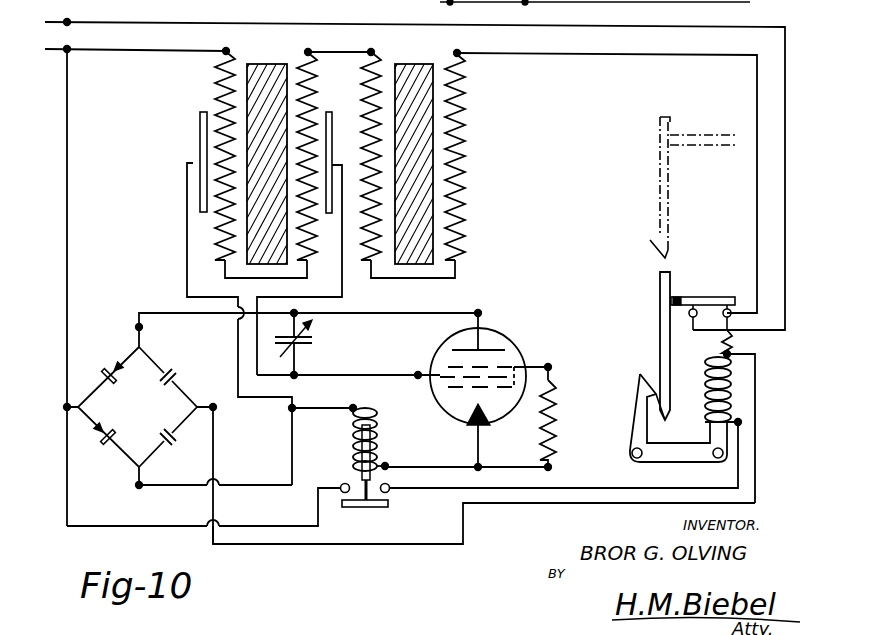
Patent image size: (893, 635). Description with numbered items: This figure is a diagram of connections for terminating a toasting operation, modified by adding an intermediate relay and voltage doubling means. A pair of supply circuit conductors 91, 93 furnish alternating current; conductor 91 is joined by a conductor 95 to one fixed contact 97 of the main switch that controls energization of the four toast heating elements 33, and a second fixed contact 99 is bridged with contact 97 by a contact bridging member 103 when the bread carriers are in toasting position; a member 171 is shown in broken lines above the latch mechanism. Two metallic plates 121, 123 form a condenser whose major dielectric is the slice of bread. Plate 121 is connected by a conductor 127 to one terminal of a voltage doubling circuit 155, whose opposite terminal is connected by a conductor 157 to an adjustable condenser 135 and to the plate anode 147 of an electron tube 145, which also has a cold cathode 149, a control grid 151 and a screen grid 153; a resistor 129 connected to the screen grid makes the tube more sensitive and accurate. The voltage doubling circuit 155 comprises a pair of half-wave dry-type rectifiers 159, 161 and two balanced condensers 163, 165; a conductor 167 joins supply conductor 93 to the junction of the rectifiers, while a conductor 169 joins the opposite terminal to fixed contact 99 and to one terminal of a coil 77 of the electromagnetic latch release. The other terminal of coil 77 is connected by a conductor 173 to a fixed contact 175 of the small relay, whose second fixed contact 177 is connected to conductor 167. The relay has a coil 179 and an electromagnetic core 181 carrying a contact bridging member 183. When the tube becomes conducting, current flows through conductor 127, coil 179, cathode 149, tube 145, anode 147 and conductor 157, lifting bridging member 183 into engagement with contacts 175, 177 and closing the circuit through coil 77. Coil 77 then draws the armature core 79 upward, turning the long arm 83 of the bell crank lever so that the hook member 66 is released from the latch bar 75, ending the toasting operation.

The supply circuit conductor 91 is at (50, 22).
The supply circuit conductor 93 is at (50, 50).
The conductor 95 is at (660, 30).
The metallic plate 121 is at (200, 135).
The metallic plate 123 is at (332, 131).
The toast heating element 33 is at (467, 133).
The conductor 127 is at (187, 262).
The adjustable condenser 135 is at (312, 338).
The conductor 157 is at (405, 316).
The electron tube 145 is at (517, 343).
The plate anode 147 is at (493, 347).
The control grid 151 is at (443, 378).
The cold cathode 149 is at (485, 413).
The screen grid 153 is at (540, 363).
The resistor 129 is at (557, 418).
The conductor 173 is at (561, 455).
The voltage doubling circuit 155 is at (147, 417).
The half-wave dry-type rectifier 159 is at (112, 368).
The half-wave dry-type rectifier 161 is at (105, 450).
The balanced condenser 163 is at (183, 363).
The balanced condenser 165 is at (178, 448).
The conductor 167 is at (68, 268).
The conductor 169 is at (355, 545).
The relay coil 179 is at (376, 423).
The electromagnetic core 181 is at (355, 438).
The contact bridging member 183 is at (370, 508).
The fixed contact 177 is at (345, 483).
The fixed contact 175 is at (390, 492).
The actuating rod 171 is at (757, 215).
The latch bar 75 is at (640, 375).
The contact bridging member 103 is at (718, 298).
The fixed contact 97 is at (692, 320).
The fixed contact 99 is at (732, 317).
The coil 77 is at (731, 395).
The armature core 79 is at (730, 435).
The long arm 83 is at (682, 470).
The hook member 66 is at (670, 405).